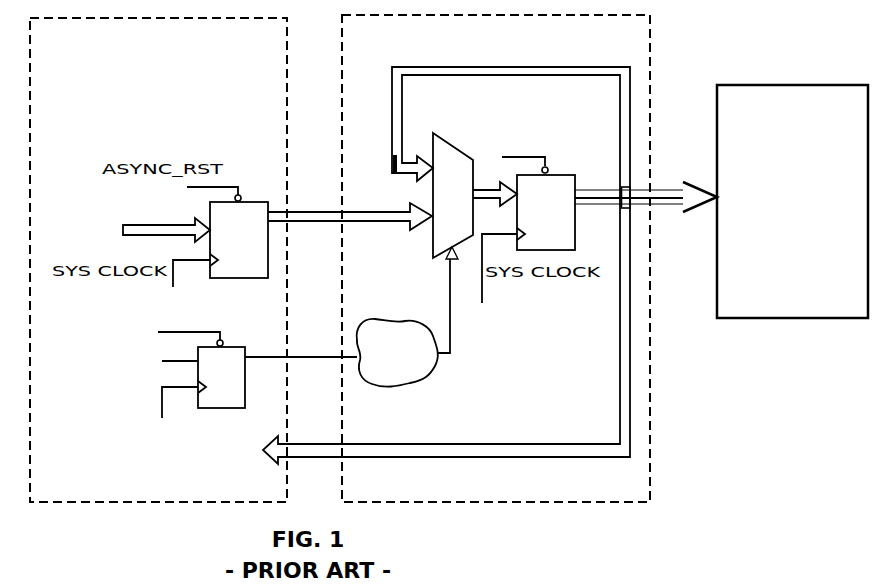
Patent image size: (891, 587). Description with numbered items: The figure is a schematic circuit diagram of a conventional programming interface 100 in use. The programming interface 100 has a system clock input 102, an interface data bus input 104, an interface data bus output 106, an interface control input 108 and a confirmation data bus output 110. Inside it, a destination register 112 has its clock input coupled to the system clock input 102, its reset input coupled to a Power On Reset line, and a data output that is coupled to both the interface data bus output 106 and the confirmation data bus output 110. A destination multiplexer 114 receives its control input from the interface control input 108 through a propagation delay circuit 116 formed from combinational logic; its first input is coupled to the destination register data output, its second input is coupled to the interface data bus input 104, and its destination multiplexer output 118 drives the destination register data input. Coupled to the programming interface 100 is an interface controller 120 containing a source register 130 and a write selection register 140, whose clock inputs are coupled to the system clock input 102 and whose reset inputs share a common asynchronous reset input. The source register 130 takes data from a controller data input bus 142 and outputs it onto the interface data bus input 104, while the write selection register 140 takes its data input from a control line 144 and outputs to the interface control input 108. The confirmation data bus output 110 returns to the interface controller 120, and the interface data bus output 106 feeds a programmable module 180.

The programming interface 100 is at (496, 258).
The system clock input 102 is at (162, 418).
The interface data bus input 104 is at (338, 212).
The interface data bus output 106 is at (665, 192).
The interface control input 108 is at (340, 357).
The confirmation data bus output 110 is at (340, 443).
The destination register 112 is at (557, 172).
The destination multiplexer 114 is at (460, 148).
The propagation delay circuit 116 is at (435, 363).
The destination multiplexer output 118 is at (477, 197).
The interface controller 120 is at (158, 260).
The source register 130 is at (237, 278).
The write selection register 140 is at (217, 408).
The controller data input bus 142 is at (175, 230).
The control line 144 is at (160, 361).
The programmable module 180 is at (792, 201).